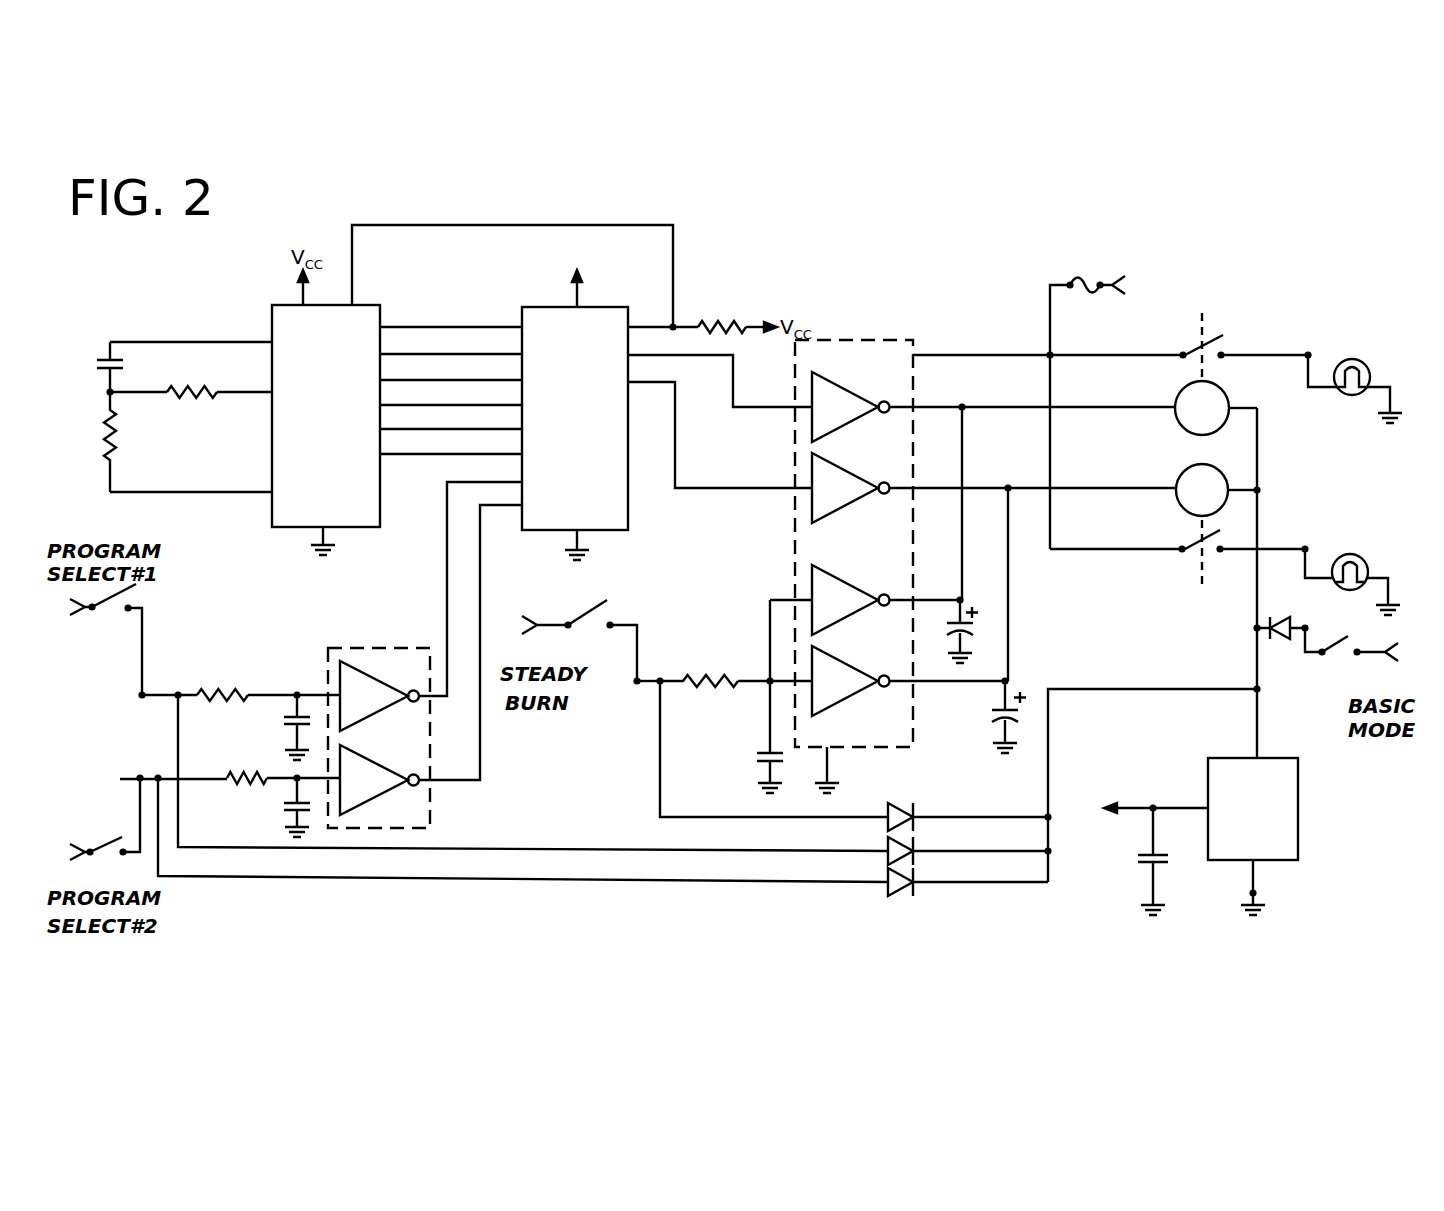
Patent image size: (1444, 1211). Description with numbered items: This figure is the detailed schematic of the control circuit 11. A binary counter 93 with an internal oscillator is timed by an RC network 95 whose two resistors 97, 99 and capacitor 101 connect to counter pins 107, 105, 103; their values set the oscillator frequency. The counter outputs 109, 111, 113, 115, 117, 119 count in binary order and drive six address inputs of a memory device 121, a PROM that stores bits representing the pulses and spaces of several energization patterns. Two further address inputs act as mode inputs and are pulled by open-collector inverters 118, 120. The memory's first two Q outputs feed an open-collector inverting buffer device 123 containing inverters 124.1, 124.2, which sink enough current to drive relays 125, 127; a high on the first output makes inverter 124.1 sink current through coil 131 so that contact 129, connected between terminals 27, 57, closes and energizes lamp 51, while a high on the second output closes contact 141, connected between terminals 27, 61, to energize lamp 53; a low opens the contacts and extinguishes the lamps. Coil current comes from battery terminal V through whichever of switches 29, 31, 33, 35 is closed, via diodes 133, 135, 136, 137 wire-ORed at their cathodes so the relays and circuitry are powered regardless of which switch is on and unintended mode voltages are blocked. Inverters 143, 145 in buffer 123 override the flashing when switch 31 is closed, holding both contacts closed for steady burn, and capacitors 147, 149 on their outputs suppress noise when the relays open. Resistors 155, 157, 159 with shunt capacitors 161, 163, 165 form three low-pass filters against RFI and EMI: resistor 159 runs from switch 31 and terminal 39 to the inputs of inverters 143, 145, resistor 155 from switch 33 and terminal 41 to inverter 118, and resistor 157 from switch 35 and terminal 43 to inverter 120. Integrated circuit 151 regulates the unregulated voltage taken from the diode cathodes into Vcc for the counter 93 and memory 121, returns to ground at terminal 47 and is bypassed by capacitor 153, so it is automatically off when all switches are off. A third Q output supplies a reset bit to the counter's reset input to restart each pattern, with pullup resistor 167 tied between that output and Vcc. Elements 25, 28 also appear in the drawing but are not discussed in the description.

The control circuit 11 is at (319, 921).
The power switch 25 is at (1082, 284).
The terminal 27 is at (1048, 353).
The basic mode switch terminal 28 is at (1330, 615).
The switch 29 is at (1340, 655).
The switch 31 is at (598, 615).
The switch 33 is at (113, 612).
The switch 35 is at (110, 860).
The terminal 39 is at (634, 685).
The terminal 41 is at (137, 700).
The terminal 43 is at (147, 777).
The terminal 47 is at (1257, 893).
The lamp 51 is at (1366, 367).
The lamp 53 is at (1364, 563).
The terminal 57 is at (1308, 356).
The terminal 61 is at (1306, 553).
The binary counter 93 is at (285, 528).
The RC network 95 is at (176, 414).
The resistor 97 is at (118, 444).
The resistor 99 is at (190, 400).
The capacitor 101 is at (108, 340).
The counter pin 103 is at (272, 336).
The counter pin 105 is at (272, 386).
The counter pin 107 is at (272, 492).
The binary counter output 109 is at (405, 305).
The binary counter output 111 is at (407, 334).
The binary counter output 113 is at (403, 362).
The binary counter output 115 is at (402, 388).
The binary counter output 117 is at (407, 413).
The inverter 118 is at (372, 672).
The binary counter output 119 is at (398, 455).
The inverter 120 is at (382, 795).
The memory device 121 is at (615, 522).
The open collector inverting buffer device 123 is at (868, 340).
The inverter 124.1 is at (825, 376).
The inverter 124.2 is at (838, 450).
The relay 125 is at (1224, 423).
The relay 127 is at (1171, 509).
The contact 129 is at (1195, 352).
The coil 131 is at (1180, 432).
The diode 133 is at (1275, 645).
The diode 135 is at (905, 805).
The diode 136 is at (885, 848).
The diode 137 is at (903, 897).
The contact 141 is at (1188, 556).
The inverter 143 is at (845, 580).
The inverter 145 is at (840, 705).
The capacitor 147 is at (962, 595).
The capacitor 149 is at (1000, 712).
The integrated circuit 151 is at (1298, 830).
The capacitor 153 is at (1137, 858).
The resistor 155 is at (225, 690).
The resistor 157 is at (253, 775).
The resistor 159 is at (727, 672).
The shunt capacitor 161 is at (285, 722).
The shunt capacitor 163 is at (285, 805).
The shunt capacitor 165 is at (760, 758).
The pullup resistor 167 is at (732, 322).